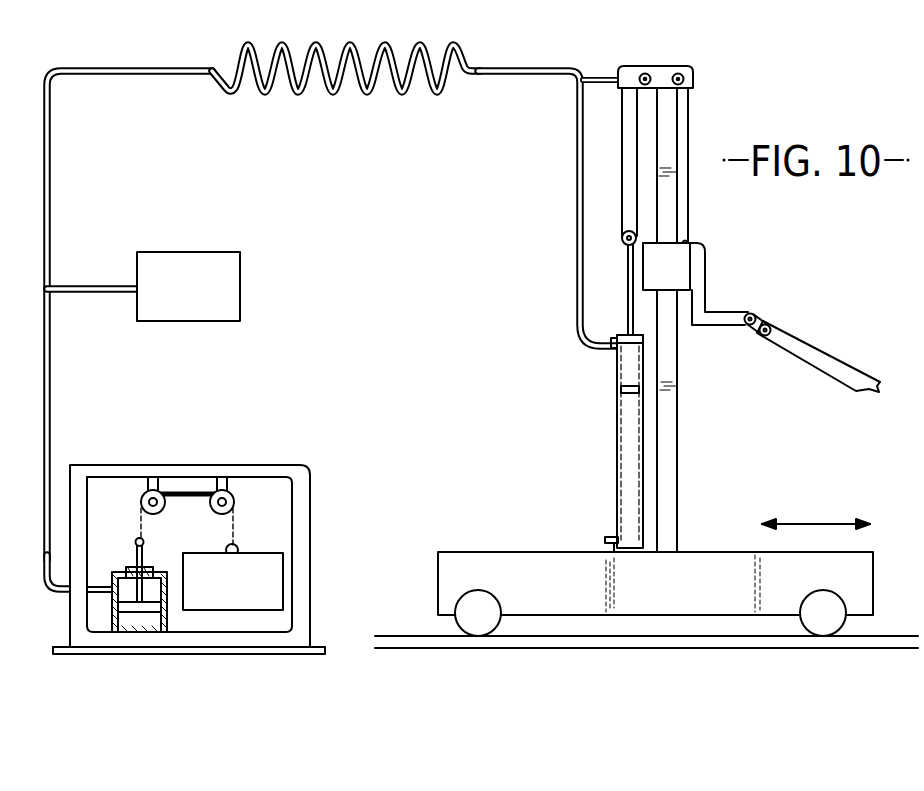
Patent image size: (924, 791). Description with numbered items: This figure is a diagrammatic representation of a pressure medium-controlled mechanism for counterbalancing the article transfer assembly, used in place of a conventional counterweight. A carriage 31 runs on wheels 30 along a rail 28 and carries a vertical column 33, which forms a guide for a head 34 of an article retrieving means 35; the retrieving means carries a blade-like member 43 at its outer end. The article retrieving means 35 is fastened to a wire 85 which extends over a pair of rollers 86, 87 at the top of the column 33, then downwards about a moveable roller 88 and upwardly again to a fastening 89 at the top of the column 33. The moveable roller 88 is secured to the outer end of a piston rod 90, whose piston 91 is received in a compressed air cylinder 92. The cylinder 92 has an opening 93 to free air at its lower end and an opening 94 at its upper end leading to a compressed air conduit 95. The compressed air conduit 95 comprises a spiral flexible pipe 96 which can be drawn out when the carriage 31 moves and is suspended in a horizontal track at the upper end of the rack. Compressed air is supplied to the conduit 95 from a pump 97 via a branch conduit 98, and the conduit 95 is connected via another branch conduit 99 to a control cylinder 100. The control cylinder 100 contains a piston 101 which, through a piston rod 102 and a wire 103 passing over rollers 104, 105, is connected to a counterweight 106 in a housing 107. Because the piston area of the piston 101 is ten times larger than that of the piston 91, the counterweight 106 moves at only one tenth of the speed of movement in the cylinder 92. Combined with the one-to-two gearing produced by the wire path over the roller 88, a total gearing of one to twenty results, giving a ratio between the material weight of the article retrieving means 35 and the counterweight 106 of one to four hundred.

The rail 28 is at (622, 646).
The wheels 30 is at (481, 624).
The carriage 31 is at (684, 581).
The vertical column 33 is at (665, 142).
The head 34 is at (674, 271).
The article retrieving means 35 is at (728, 310).
The blade 43 is at (797, 346).
The wire 85 is at (689, 217).
The roller 86 is at (683, 73).
The roller 87 is at (647, 74).
The moveable roller 88 is at (623, 236).
The fastening 89 is at (622, 67).
The piston rod 90 is at (627, 283).
The piston 91 is at (620, 392).
The compressed air cylinder 92 is at (617, 470).
The opening 93 is at (605, 539).
The opening 94 is at (614, 350).
The compressed air conduit 95 is at (577, 148).
The spiral flexible pipe 96 is at (336, 88).
The pump 97 is at (193, 272).
The branch conduit 98 is at (88, 283).
The branch conduit 99 is at (52, 397).
The control cylinder 100 is at (137, 633).
The piston 101 is at (145, 617).
The piston rod 102 is at (137, 557).
The wire 103 is at (235, 528).
The roller 104 is at (163, 492).
The roller 105 is at (229, 496).
The counterweight 106 is at (238, 598).
The housing 107 is at (298, 548).